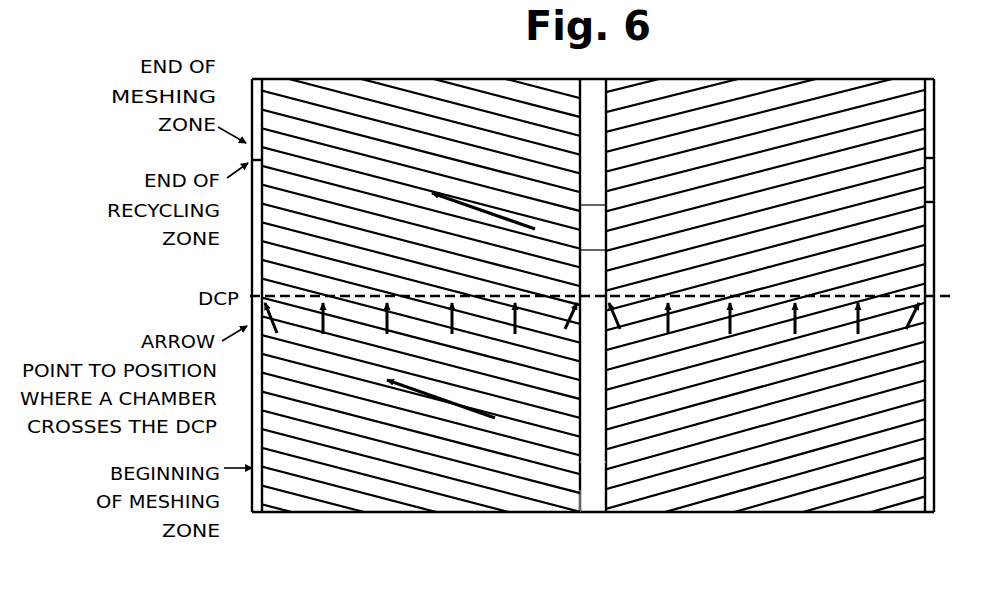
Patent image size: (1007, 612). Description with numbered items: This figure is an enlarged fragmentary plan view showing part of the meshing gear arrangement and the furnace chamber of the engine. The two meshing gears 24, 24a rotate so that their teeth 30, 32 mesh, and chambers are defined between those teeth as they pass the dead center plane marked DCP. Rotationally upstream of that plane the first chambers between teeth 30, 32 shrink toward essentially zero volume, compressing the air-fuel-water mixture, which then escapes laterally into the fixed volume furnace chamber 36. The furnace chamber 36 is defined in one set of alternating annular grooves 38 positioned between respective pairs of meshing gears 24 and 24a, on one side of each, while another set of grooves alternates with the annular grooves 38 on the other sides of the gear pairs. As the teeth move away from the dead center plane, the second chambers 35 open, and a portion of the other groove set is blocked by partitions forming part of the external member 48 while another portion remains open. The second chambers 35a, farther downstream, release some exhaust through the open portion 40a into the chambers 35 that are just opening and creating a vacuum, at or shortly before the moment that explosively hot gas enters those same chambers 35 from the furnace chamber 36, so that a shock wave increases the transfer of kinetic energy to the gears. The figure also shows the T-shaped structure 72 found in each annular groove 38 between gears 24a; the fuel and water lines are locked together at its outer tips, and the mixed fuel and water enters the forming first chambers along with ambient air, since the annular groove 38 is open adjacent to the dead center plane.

The meshing gear 24 is at (728, 79).
The meshing gear 24a is at (797, 500).
The tooth 30 is at (873, 128).
The tooth 32 is at (906, 370).
The second chamber 35 is at (897, 244).
The second chamber 35a is at (810, 212).
The furnace chamber 36 is at (593, 268).
The annular groove 38 is at (593, 462).
The open portion of groove 40a is at (926, 200).
The external member 48 is at (927, 134).
The T-shaped structure 72 is at (580, 490).